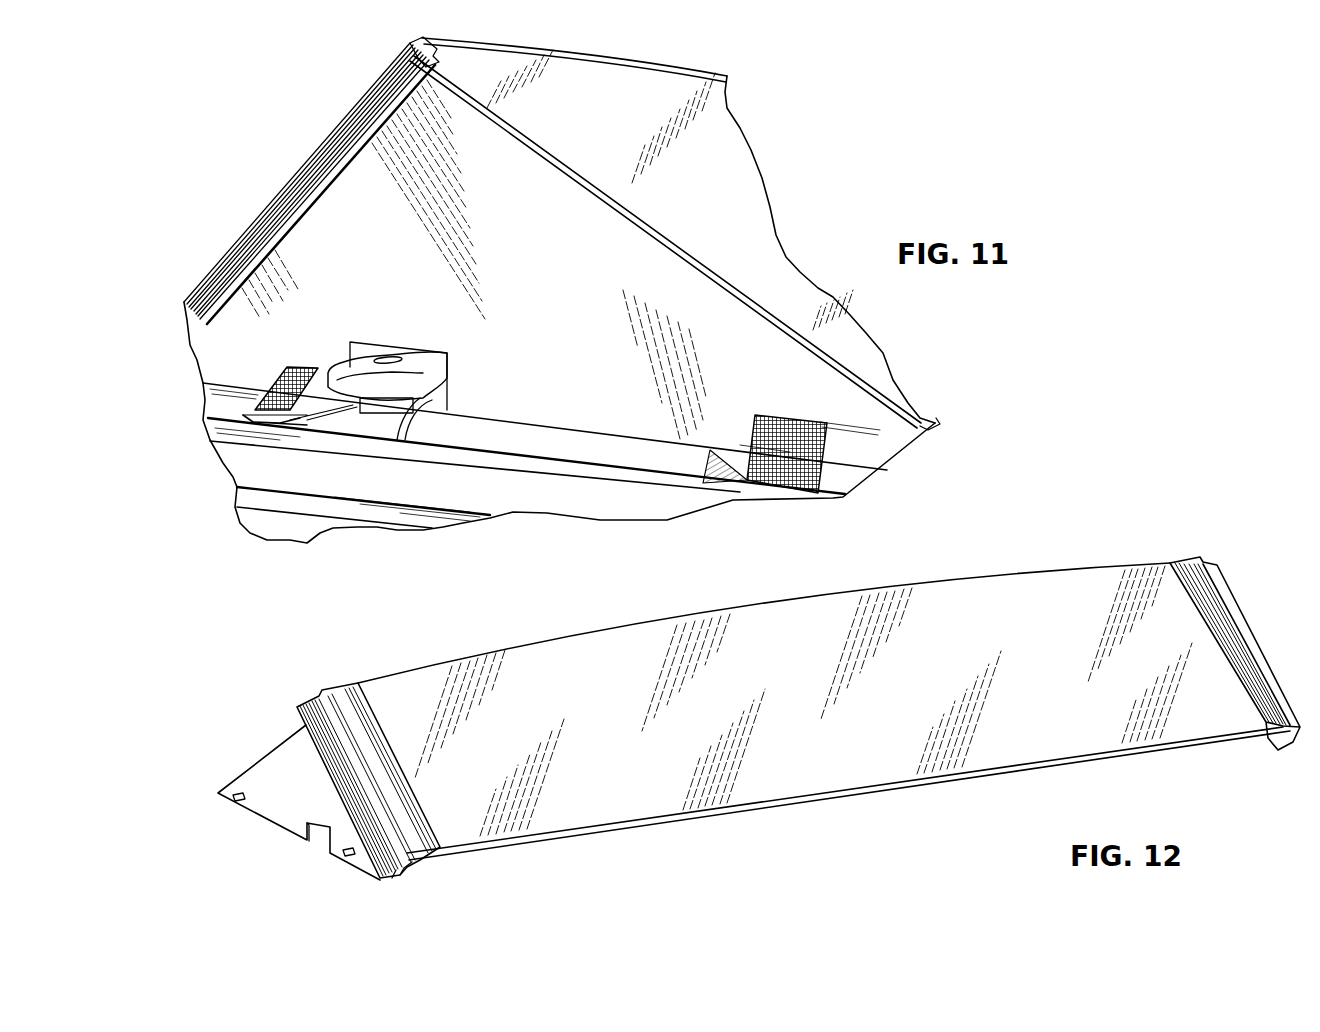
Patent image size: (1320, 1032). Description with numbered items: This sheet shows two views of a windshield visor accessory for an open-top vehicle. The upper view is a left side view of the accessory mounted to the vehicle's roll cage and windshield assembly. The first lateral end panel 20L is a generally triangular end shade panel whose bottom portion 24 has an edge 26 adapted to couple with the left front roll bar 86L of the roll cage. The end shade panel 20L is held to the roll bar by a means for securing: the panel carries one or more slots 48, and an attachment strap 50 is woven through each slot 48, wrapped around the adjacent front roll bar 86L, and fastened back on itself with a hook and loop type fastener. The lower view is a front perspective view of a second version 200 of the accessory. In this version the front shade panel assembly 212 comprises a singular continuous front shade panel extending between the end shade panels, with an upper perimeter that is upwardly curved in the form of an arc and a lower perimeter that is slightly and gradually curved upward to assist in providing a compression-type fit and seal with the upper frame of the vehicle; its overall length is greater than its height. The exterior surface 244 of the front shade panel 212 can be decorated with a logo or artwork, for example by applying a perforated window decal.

In FIG. 11, the first lateral end panel 20L is at (656, 222).
In FIG. 11, the bottom portion 24 is at (504, 396).
In FIG. 11, the edge 26 is at (634, 437).
In FIG. 11, the slot 48 is at (812, 411).
In FIG. 11, the attachment strap 50 is at (747, 480).
In FIG. 11, the front roll bar 86L is at (843, 482).
In FIG. 12, the second version 200 is at (1159, 511).
In FIG. 12, the front shade panel assembly 212 is at (972, 564).
In FIG. 12, the surface 244 is at (1035, 638).